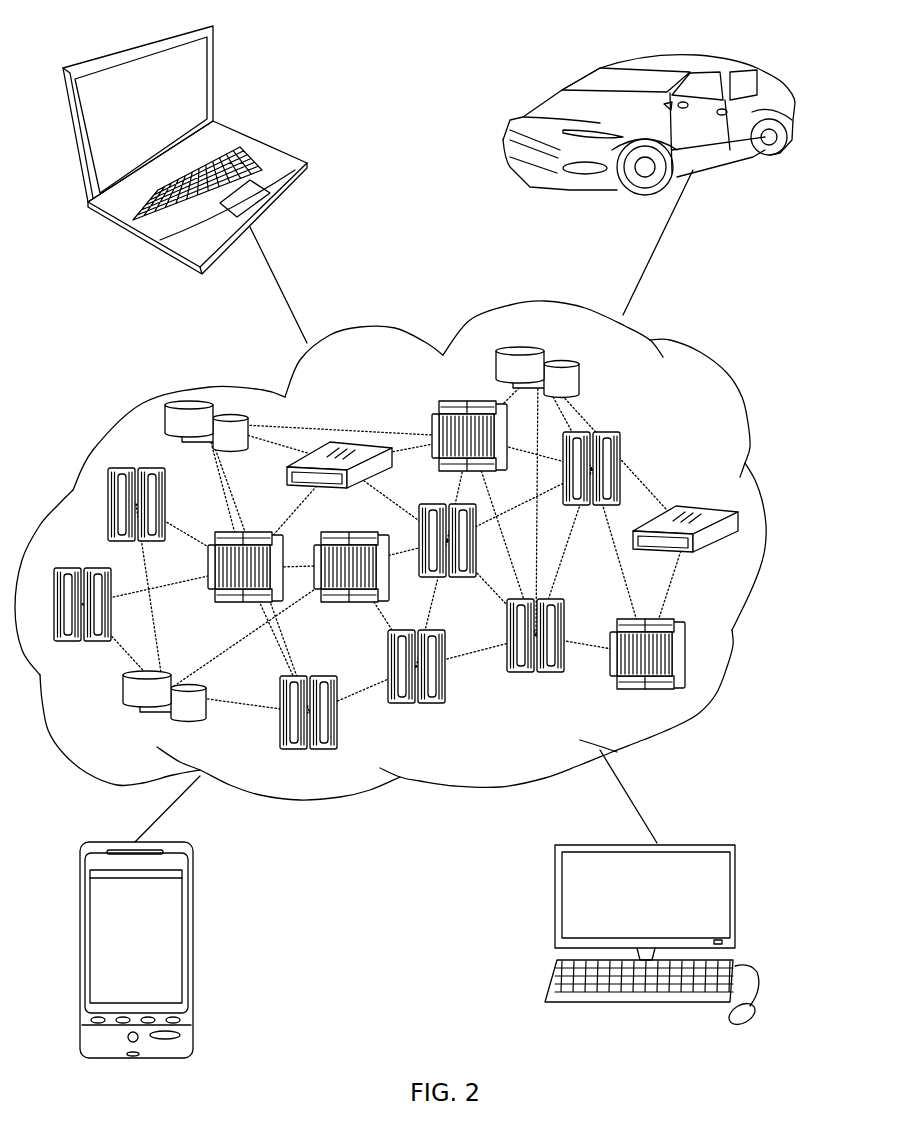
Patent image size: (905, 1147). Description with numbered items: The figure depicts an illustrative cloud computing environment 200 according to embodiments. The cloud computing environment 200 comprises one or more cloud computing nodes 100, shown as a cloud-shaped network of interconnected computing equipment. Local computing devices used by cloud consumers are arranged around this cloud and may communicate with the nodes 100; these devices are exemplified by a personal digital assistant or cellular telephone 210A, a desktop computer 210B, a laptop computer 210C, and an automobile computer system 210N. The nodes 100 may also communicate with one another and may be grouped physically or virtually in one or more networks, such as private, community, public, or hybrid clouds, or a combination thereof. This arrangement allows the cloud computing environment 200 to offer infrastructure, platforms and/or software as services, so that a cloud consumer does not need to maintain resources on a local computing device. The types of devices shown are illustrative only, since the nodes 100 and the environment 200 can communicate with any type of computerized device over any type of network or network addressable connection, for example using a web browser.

The cloud computing node 100 is at (713, 488).
The cloud computing environment 200 is at (723, 363).
The personal digital assistant (PDA) or cellular telephone 210A is at (230, 846).
The desktop computer 210B is at (777, 846).
The laptop computer 210C is at (307, 127).
The automobile computer system 210N is at (758, 70).